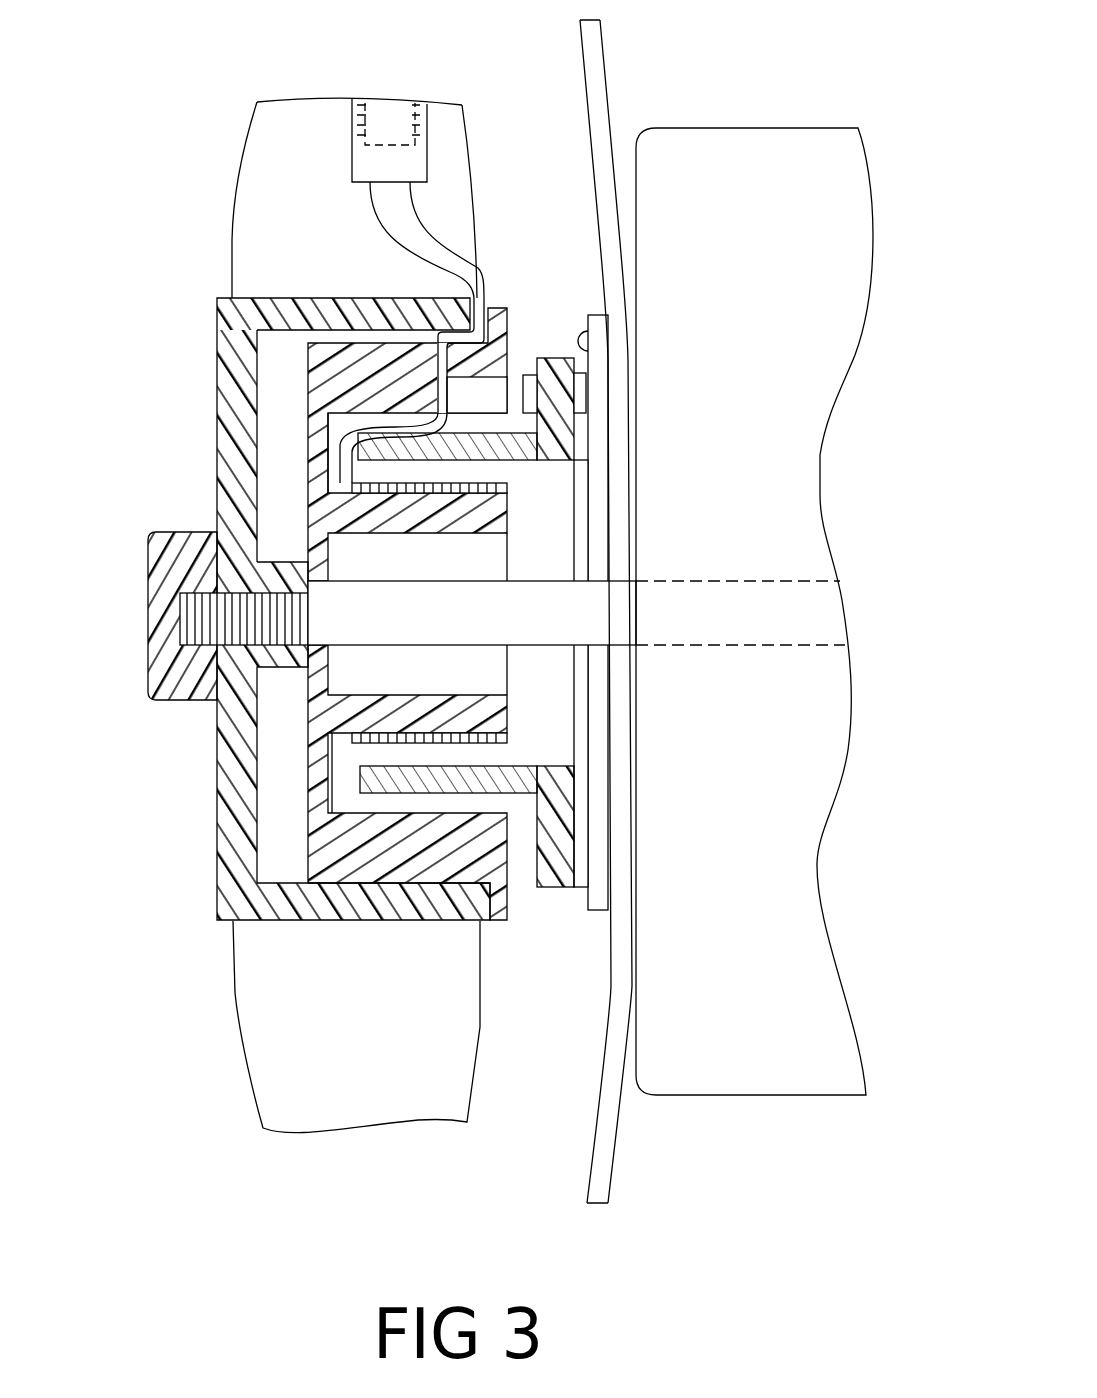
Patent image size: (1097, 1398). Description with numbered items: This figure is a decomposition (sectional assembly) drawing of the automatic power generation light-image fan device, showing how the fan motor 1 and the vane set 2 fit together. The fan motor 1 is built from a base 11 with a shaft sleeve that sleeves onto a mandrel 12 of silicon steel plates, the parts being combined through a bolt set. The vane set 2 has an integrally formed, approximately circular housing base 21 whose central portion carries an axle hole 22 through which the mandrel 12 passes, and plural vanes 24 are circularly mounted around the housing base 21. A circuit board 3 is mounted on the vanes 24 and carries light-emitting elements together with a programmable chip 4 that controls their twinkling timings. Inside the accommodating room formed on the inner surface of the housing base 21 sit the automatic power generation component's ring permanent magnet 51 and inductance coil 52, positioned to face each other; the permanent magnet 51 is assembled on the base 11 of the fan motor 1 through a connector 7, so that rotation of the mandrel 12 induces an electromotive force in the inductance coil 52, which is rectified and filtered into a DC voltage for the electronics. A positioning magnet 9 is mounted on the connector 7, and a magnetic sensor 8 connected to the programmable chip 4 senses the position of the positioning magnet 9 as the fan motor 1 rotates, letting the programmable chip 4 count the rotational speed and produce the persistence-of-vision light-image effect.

The fan motor 1 is at (808, 110).
The base 11 is at (745, 160).
The mandrel 12 is at (222, 620).
The vane set 2 is at (168, 240).
The housing base 21 is at (317, 305).
The axle hole 22 is at (277, 560).
The vanes 24 is at (272, 140).
The circuit board 3 is at (357, 162).
The programmable chip 4 is at (392, 125).
The permanent magnet 51 is at (387, 783).
The inductance coil 52 is at (400, 743).
The connector 7 is at (558, 370).
The magnetic sensor 8 is at (487, 387).
The positioning magnet 9 is at (530, 393).